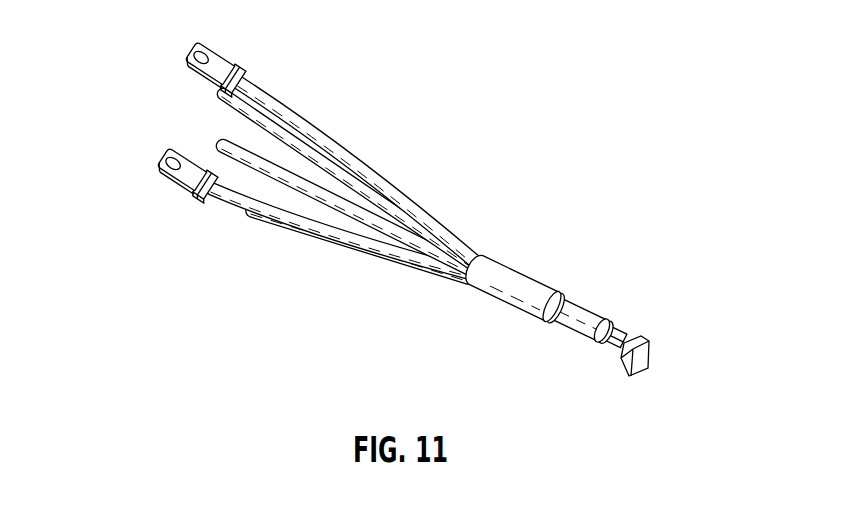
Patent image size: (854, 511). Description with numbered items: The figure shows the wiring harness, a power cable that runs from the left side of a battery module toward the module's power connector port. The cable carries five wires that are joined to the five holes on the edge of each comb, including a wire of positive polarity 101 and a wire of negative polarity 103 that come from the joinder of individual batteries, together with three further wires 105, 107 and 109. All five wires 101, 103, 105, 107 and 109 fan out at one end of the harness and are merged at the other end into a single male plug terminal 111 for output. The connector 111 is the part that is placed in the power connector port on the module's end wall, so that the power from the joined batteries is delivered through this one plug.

The wire of positive polarity 101 is at (158, 160).
The wire of negative polarity 103 is at (185, 58).
The wire 105 is at (277, 130).
The wire 107 is at (222, 142).
The wire 109 is at (264, 224).
The male plug terminal 111 is at (650, 360).